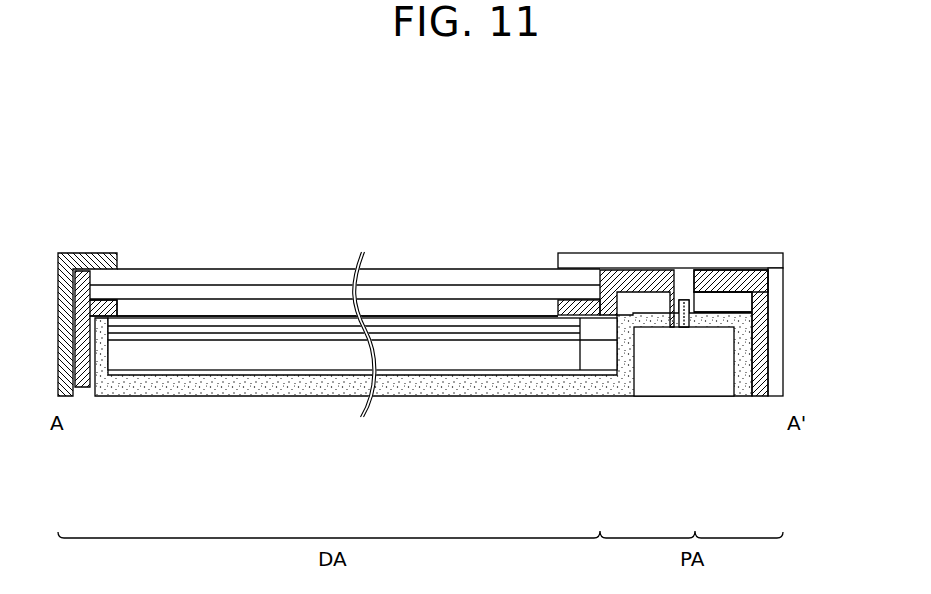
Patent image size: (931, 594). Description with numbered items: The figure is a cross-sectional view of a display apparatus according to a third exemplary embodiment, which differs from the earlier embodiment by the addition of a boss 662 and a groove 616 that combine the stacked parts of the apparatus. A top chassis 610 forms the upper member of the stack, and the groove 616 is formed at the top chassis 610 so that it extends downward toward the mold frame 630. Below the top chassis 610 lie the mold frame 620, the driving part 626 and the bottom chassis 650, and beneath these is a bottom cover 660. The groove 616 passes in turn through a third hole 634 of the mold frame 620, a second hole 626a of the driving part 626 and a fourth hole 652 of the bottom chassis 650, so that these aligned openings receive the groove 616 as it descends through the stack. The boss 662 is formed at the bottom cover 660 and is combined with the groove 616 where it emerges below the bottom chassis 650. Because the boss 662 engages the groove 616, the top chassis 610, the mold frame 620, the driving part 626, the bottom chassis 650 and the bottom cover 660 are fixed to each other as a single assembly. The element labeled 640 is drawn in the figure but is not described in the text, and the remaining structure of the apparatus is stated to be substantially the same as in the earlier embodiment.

The top chassis 610 is at (588, 254).
The groove 616 is at (703, 296).
The mold frame 620 is at (257, 271).
The driving part 626 is at (732, 303).
The second hole 626a is at (729, 283).
The mold frame 630 is at (768, 267).
The third hole 634 is at (668, 282).
The adhesive layer 640 is at (170, 314).
The bottom chassis 650 is at (592, 395).
The fourth hole 652 is at (706, 318).
The bottom cover 660 is at (685, 395).
The boss 662 is at (685, 328).